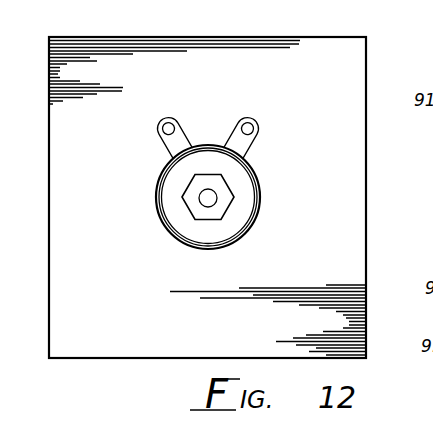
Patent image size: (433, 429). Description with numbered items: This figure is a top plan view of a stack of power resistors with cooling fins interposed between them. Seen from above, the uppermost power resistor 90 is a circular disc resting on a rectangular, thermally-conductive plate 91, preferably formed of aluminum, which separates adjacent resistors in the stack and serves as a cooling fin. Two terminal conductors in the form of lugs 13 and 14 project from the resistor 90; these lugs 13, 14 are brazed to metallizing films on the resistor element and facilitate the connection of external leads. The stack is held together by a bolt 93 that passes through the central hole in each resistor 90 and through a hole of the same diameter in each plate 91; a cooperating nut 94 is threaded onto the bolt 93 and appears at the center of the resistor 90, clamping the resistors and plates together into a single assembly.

The lug 13 is at (170, 144).
The lug 14 is at (249, 145).
The power resistor 90 is at (260, 190).
The thermally-conductive plate 91 is at (60, 233).
The bolt 93 is at (208, 198).
The nut 94 is at (218, 212).